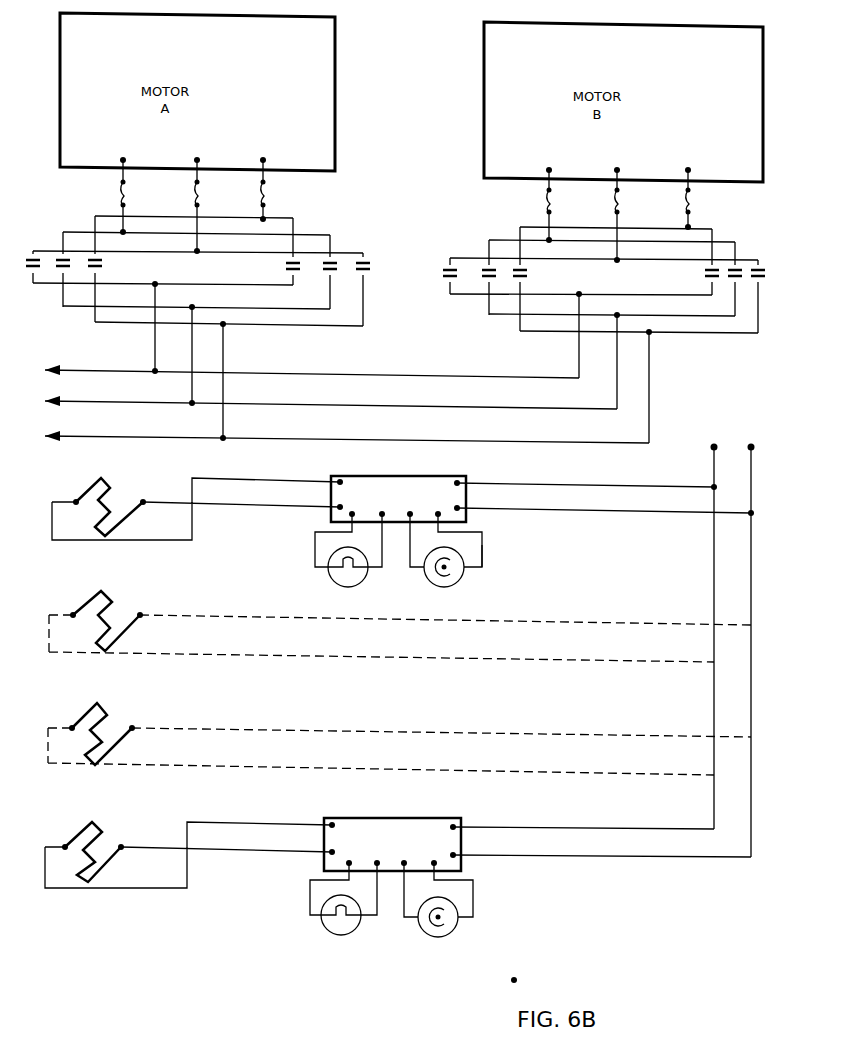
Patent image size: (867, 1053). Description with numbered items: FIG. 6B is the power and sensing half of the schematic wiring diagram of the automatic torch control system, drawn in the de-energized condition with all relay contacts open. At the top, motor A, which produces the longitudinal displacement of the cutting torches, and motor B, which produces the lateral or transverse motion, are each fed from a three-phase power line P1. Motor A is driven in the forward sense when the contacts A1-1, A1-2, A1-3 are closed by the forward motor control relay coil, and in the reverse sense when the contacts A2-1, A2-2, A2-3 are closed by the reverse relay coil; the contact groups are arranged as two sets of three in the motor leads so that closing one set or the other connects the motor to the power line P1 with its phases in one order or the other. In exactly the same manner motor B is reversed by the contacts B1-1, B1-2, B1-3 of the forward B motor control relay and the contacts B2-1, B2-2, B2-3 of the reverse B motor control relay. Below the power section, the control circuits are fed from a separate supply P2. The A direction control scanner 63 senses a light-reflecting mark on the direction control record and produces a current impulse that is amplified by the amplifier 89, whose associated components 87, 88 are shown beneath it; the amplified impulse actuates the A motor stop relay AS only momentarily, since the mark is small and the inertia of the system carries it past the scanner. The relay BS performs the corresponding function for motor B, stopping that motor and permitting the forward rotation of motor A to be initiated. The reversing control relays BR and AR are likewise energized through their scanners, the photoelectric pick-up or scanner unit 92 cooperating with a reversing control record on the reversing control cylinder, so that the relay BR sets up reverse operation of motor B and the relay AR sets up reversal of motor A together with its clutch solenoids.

The forward relay contact of motor A A1-1 is at (40, 240).
The forward relay contact of motor A A1-2 is at (60, 272).
The forward relay contact of motor A A1-3 is at (97, 262).
The reverse relay contact of motor A A2-1 is at (287, 266).
The reverse relay contact of motor A A2-2 is at (334, 264).
The reverse relay contact of motor A A2-3 is at (365, 276).
The forward relay contact of motor B B1-1 is at (449, 266).
The forward relay contact of motor B B1-2 is at (486, 279).
The forward relay contact of motor B B1-3 is at (524, 276).
The reverse relay contact of motor B B2-1 is at (706, 278).
The reverse relay contact of motor B B2-2 is at (738, 266).
The reverse relay contact of motor B B2-3 is at (762, 280).
The three-phase power line P1 is at (333, 404).
The control power supply P2 is at (733, 648).
The A motor stop relay AS is at (110, 480).
The B motor stop relay BS is at (108, 595).
The A reversing control relay AR is at (99, 707).
The B reversing control relay BR is at (93, 824).
The amplifier 89 is at (385, 476).
The indicator lamp 87 is at (360, 580).
The indicator lamp 88 is at (452, 583).
The A direction control scanner 63 is at (482, 562).
The photoelectric pick-up or scanner unit 92 is at (473, 898).